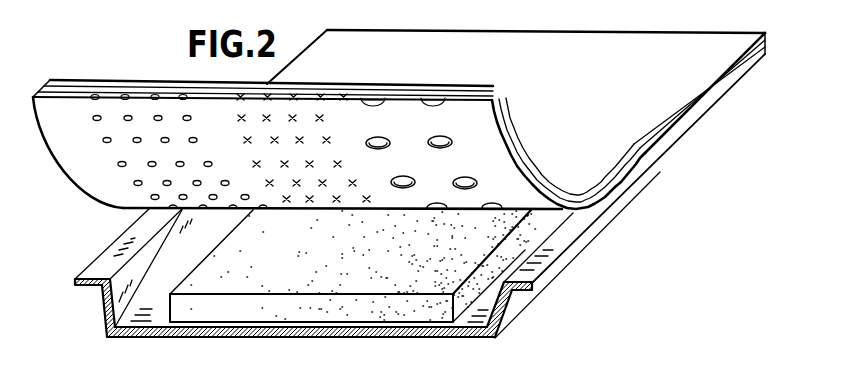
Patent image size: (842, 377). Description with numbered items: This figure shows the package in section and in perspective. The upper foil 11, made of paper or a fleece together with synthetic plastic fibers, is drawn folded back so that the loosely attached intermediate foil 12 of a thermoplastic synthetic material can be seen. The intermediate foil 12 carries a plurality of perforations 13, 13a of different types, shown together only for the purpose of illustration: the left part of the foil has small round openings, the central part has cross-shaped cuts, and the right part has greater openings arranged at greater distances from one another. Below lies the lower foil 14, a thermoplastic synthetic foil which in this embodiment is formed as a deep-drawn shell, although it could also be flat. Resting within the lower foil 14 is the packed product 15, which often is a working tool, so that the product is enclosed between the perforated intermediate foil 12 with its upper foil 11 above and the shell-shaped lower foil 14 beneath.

The upper foil 11 is at (677, 120).
The intermediate foil 12 is at (682, 132).
The perforation 13 is at (100, 116).
The perforation 13a is at (128, 116).
The lower foil 14 is at (582, 240).
The packed product 15 is at (297, 307).